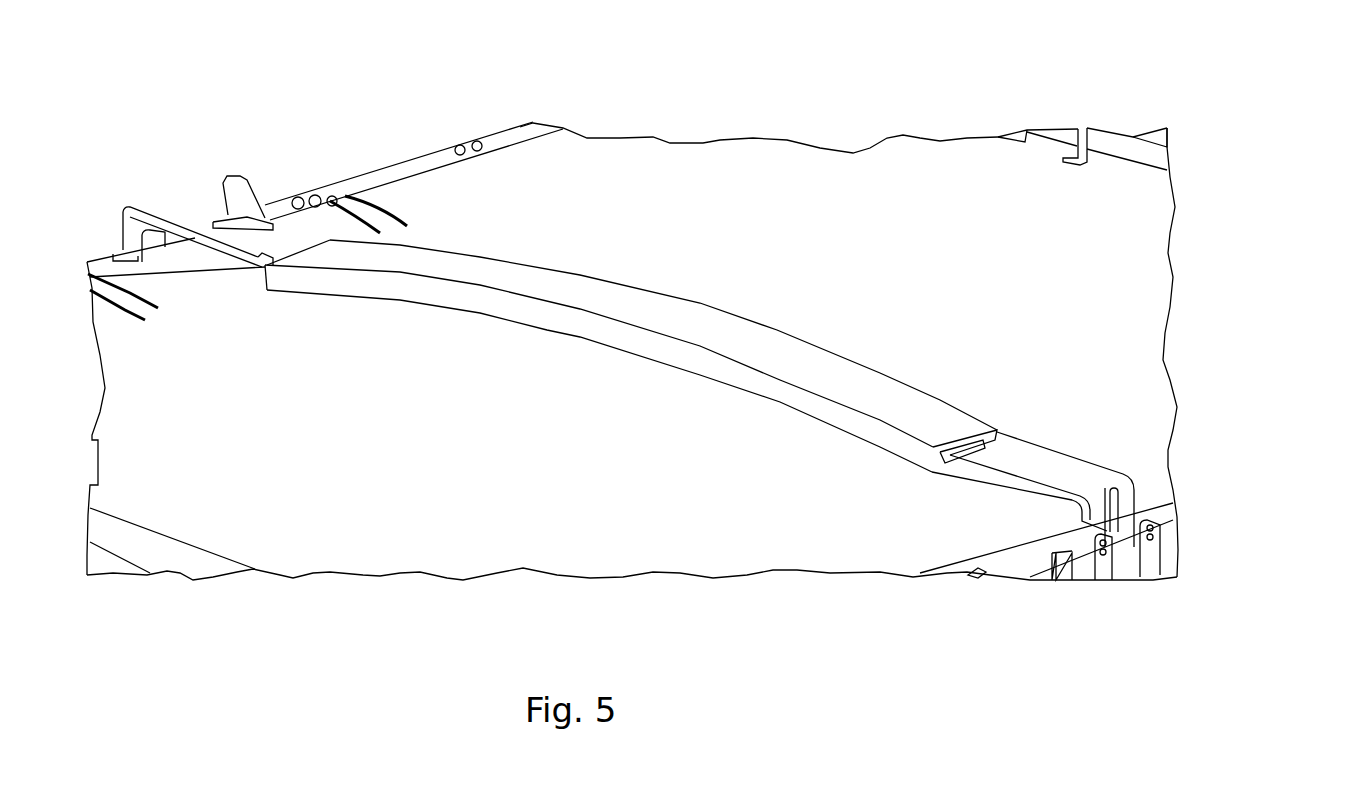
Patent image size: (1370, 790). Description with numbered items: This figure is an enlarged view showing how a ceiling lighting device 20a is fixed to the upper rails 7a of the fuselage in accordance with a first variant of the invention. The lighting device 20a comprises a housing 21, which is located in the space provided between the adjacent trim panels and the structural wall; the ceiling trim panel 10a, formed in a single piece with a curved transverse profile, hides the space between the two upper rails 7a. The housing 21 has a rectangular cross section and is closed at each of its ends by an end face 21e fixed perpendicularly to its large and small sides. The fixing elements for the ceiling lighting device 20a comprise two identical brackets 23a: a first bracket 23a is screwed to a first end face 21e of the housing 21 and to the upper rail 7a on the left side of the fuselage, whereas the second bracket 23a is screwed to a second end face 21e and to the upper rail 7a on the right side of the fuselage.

The upper rail 7a is at (397, 170).
The ceiling trim panel 10a is at (1127, 333).
The ceiling lighting device 20a is at (993, 387).
The housing 21 is at (876, 385).
The end face 21e is at (993, 433).
The bracket 23a is at (138, 205).